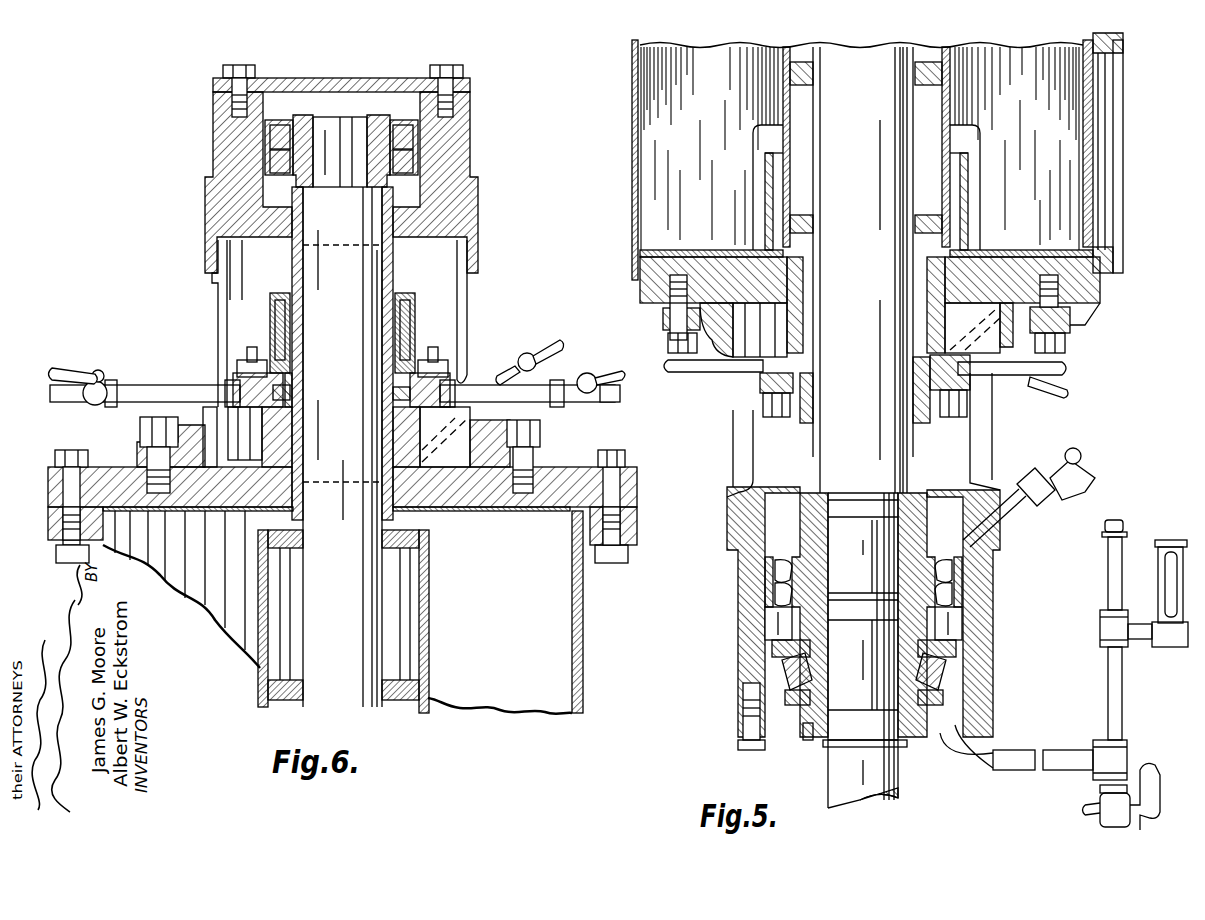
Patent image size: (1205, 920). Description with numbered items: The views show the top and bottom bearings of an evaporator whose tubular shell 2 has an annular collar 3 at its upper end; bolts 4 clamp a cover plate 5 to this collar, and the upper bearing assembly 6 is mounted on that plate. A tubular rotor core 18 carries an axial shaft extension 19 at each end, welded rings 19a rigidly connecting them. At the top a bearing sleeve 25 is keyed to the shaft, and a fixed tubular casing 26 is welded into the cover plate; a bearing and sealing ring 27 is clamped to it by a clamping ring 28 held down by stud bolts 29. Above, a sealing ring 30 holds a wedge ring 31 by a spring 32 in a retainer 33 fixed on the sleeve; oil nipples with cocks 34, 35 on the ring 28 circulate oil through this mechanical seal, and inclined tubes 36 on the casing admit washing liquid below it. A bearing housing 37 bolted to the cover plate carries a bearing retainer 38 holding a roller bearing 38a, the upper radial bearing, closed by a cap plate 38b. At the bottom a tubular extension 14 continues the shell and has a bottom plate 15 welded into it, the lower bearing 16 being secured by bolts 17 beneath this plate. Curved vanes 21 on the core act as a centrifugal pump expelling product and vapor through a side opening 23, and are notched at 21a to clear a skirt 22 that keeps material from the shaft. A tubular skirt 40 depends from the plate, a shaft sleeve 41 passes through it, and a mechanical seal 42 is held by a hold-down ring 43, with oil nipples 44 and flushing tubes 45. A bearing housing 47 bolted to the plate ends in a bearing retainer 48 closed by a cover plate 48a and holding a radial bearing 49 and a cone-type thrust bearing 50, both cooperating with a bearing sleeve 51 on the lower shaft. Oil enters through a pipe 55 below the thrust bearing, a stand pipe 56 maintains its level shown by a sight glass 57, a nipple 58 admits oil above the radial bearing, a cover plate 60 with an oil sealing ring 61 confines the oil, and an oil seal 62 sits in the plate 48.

In FIG. 6, the shell 2 is at (583, 655).
In FIG. 6, the annular collar 3 is at (637, 524).
In FIG. 6, the bolts 4 is at (637, 489).
In FIG. 6, the cover plate 5 is at (625, 467).
In FIG. 6, the upper bearing assembly 6 is at (482, 250).
In FIG. 5, the tubular extension 14 is at (632, 120).
In FIG. 5, the bottom plate 15 is at (1085, 310).
In FIG. 5, the lower bearing assembly 16 is at (995, 425).
In FIG. 5, the bolts 17 is at (668, 325).
In FIG. 6, the tubular rotor core 18 is at (430, 630).
In FIG. 5, the tubular rotor core 18 is at (790, 75).
In FIG. 5, the shaft extension 19 is at (950, 120).
In FIG. 6, the rings 19a is at (425, 575).
In FIG. 5, the rings 19a is at (942, 72).
In FIG. 5, the curved vanes 21 is at (634, 75).
In FIG. 5, the notch 21a is at (753, 140).
In FIG. 5, the skirt 22 is at (765, 185).
In FIG. 5, the opening 23 is at (1125, 195).
In FIG. 6, the bearing sleeve 25 is at (393, 268).
In FIG. 6, the tubular casing 26 is at (293, 437).
In FIG. 6, the bearing and sealing ring 27 is at (290, 403).
In FIG. 6, the clamping ring 28 is at (450, 380).
In FIG. 6, the stud bolts 29 is at (252, 358).
In FIG. 6, the sealing ring 30 is at (292, 385).
In FIG. 6, the wedge ring 31 is at (300, 358).
In FIG. 6, the spring 32 is at (415, 322).
In FIG. 6, the retainer 33 is at (415, 300).
In FIG. 6, the oil nipple with cock 34 is at (543, 404).
In FIG. 6, the oil nipple with cock 35 is at (178, 388).
In FIG. 6, the inclined tubes 36 is at (550, 362).
In FIG. 6, the bearing housing 37 is at (480, 270).
In FIG. 6, the bearing retainer 38 is at (468, 150).
In FIG. 6, the roller bearing 38a is at (412, 140).
In FIG. 6, the cap plate 38b is at (356, 78).
In FIG. 5, the tubular casing or skirt 40 is at (806, 290).
In FIG. 5, the sleeve 41 is at (822, 322).
In FIG. 5, the mechanical seal 42 is at (815, 390).
In FIG. 5, the hold-down ring 43 is at (760, 382).
In FIG. 5, the nipples 44 is at (692, 370).
In FIG. 5, the tubes 45 is at (1066, 396).
In FIG. 5, the bearing housing 47 is at (993, 460).
In FIG. 5, the bearing retainer 48 is at (740, 645).
In FIG. 5, the cover plate 48a is at (768, 750).
In FIG. 5, the radial bearing 49 is at (960, 580).
In FIG. 5, the thrust bearing 50 is at (955, 655).
In FIG. 5, the bearing sleeve 51 is at (827, 545).
In FIG. 5, the pipe 55 is at (1012, 771).
In FIG. 5, the stand pipe 56 is at (1123, 698).
In FIG. 5, the sight glass 57 is at (1170, 540).
In FIG. 5, the nipple 58 is at (1045, 500).
In FIG. 5, the cover plate 60 is at (970, 497).
In FIG. 5, the oil sealing ring 61 is at (797, 490).
In FIG. 5, the oil seal 62 is at (808, 740).